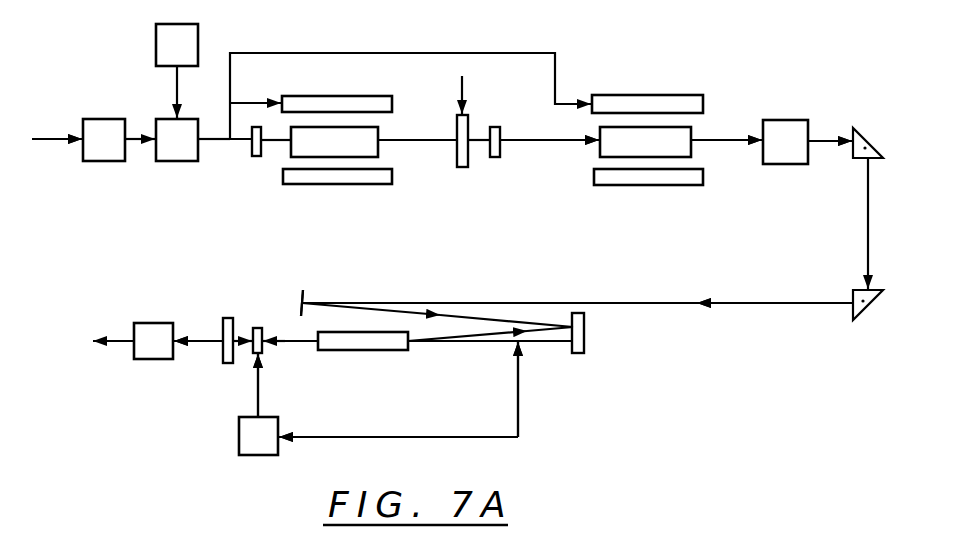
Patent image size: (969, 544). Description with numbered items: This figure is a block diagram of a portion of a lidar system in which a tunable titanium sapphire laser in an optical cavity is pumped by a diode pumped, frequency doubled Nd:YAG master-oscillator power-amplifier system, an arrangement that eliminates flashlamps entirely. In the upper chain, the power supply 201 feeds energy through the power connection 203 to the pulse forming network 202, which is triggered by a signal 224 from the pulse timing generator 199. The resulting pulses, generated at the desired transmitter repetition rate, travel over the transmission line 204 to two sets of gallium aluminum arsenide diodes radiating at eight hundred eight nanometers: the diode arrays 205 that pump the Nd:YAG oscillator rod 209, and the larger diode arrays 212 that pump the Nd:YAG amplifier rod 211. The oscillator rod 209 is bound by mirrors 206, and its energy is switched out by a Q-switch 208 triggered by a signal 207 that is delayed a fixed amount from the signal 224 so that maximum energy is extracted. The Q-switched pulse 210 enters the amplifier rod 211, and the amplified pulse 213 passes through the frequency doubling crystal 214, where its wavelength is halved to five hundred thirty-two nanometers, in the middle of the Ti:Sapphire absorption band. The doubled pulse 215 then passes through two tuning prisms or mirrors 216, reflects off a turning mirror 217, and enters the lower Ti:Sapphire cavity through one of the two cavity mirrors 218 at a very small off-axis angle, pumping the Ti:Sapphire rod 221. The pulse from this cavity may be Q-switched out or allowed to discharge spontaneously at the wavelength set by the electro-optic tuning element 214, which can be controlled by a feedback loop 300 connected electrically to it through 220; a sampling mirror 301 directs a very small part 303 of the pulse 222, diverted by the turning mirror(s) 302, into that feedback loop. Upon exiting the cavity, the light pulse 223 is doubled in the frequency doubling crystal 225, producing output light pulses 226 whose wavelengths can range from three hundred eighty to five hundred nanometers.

The pulse timing generator 199 is at (198, 36).
The power supply 201 is at (110, 161).
The pulse forming network 202 is at (188, 161).
The power connection 203 is at (72, 137).
The transmission line 204 is at (216, 141).
The diode arrays 205 is at (384, 96).
The mirrors 206 is at (256, 156).
The signal 207 is at (466, 82).
The Q-switch 208 is at (468, 127).
The Nd:YAG oscillator rod 209 is at (378, 150).
The Q-switched pulse 210 is at (565, 141).
The Nd:YAG amplifier rod 211 is at (692, 132).
The larger diode arrays 212 is at (645, 96).
The amplified pulse 213 is at (716, 141).
The frequency doubling crystal 214 is at (775, 120).
The doubled pulse 215 is at (836, 142).
The tuning prisms or mirrors 216 is at (878, 118).
The turning mirror 217 is at (303, 298).
The cavity mirrors 218 is at (226, 318).
The electrical connection 220 is at (258, 400).
The Ti:Sapphire rod 221 is at (387, 350).
The pulse 222 is at (290, 343).
The light pulse 223 is at (204, 342).
The signal 224 is at (177, 93).
The frequency doubling crystal 225 is at (151, 323).
The light pulses 226 is at (115, 340).
The feedback loop 300 is at (239, 430).
The sampling mirror 301 is at (522, 346).
The turning mirror(s) 302 is at (520, 437).
The small part of the pulse 303 is at (520, 406).